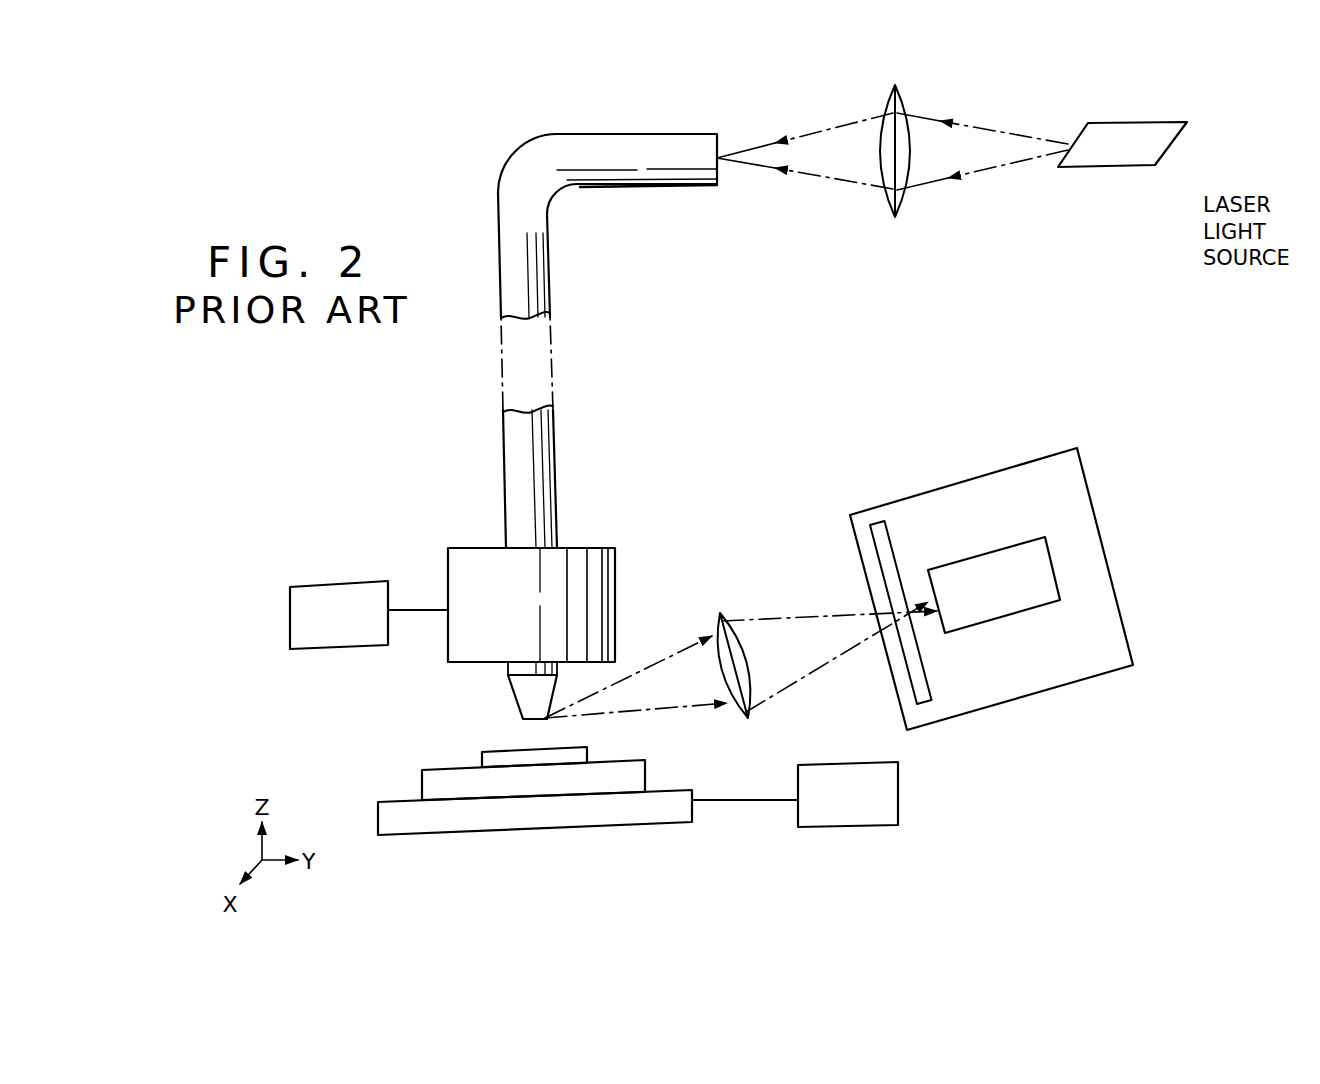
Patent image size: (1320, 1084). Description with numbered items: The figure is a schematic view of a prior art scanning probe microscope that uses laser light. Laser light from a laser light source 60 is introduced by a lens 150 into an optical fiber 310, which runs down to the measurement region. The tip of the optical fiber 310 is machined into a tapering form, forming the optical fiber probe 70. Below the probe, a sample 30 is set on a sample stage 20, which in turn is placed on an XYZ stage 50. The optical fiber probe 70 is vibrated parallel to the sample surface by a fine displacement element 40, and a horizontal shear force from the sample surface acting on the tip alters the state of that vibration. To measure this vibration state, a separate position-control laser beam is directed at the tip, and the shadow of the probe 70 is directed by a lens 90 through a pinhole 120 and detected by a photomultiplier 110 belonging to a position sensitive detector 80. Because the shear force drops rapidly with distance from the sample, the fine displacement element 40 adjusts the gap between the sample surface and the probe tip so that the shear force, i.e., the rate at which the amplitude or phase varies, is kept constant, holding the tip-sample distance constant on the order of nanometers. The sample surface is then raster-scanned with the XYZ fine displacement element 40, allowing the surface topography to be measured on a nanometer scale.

The sample stage 20 is at (645, 767).
The sample 30 is at (482, 758).
The fine displacement element 40 is at (617, 570).
The XYZ stage 50 is at (635, 825).
The laser light source 60 is at (1118, 167).
The optical fiber probe 70 is at (508, 696).
The position sensitive detector 80 is at (972, 478).
The lens 90 is at (725, 615).
The photomultiplier 110 is at (1012, 545).
The pinhole 120 is at (905, 627).
The lens 150 is at (903, 198).
The optical fiber 310 is at (556, 443).